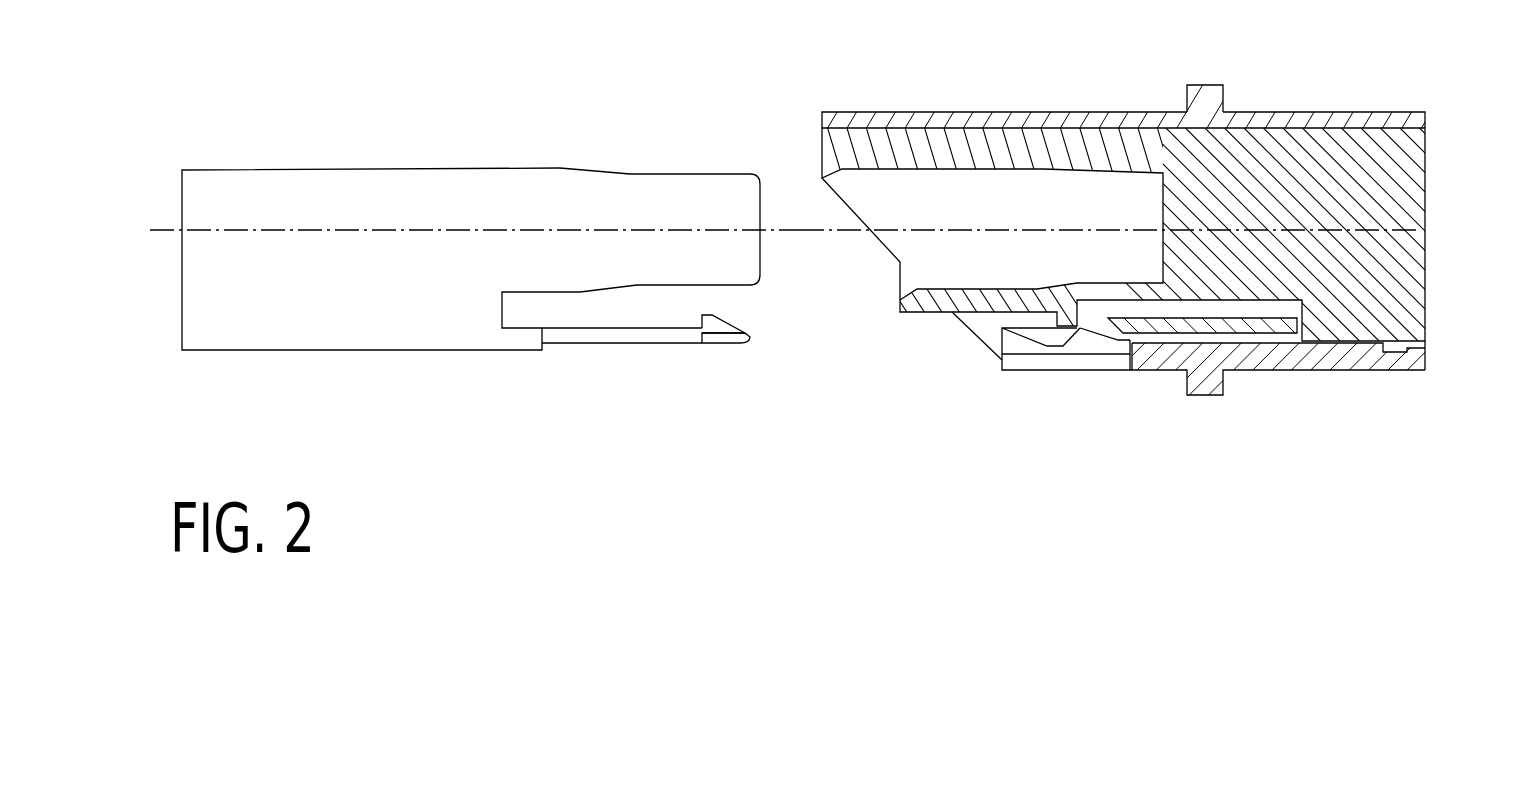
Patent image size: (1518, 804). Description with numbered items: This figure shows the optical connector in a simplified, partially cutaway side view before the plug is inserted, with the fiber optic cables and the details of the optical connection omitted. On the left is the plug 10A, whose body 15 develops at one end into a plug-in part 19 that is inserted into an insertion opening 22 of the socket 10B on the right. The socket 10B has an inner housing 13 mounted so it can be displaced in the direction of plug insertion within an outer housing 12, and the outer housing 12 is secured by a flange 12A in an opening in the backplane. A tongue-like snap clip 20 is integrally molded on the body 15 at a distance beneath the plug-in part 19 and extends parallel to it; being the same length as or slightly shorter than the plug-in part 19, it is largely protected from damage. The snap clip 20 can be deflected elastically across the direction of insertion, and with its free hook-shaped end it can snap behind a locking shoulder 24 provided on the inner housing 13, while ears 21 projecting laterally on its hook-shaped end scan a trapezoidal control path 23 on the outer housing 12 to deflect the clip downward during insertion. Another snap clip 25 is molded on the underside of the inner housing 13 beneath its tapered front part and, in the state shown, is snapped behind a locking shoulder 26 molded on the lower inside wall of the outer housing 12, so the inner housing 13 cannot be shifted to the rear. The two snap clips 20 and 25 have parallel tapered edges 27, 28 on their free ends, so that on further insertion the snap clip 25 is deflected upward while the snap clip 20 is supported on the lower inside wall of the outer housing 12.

The plug 10A is at (431, 124).
The socket 10B is at (922, 400).
The outer housing 12 is at (1387, 117).
The flange 12A is at (1212, 97).
The inner housing 13 is at (1397, 170).
The body 15 is at (374, 311).
The plug-in part 19 is at (677, 195).
The snap clip 20 is at (623, 337).
The ears 21 is at (722, 338).
The insertion opening 22 is at (960, 195).
The control path 23 is at (1031, 337).
The locking shoulder 24 is at (1067, 322).
The snap clip 25 is at (1232, 327).
The locking shoulder 26 is at (1158, 338).
The tapered edge 27 is at (728, 324).
The tapered edge 28 is at (1127, 345).